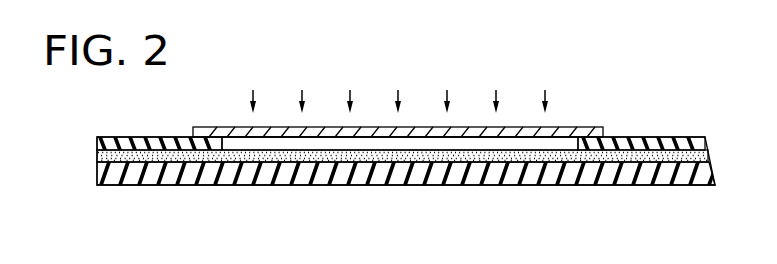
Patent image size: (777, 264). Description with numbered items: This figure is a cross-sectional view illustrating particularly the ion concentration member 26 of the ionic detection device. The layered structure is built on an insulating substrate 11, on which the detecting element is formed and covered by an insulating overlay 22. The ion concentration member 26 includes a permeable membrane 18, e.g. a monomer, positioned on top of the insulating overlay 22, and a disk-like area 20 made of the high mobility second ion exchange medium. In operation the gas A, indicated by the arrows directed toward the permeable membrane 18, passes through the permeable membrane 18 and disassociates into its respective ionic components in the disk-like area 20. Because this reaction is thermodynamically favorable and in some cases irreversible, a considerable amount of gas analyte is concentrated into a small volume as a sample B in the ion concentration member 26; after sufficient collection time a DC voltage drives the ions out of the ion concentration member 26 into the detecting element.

The ion concentration member 26 is at (137, 112).
The gas A is at (399, 87).
The permeable membrane 18 is at (594, 128).
The insulating overlay 22 is at (677, 138).
The sample B is at (472, 155).
The disk-like area 20 is at (239, 158).
The insulating substrate 11 is at (581, 178).